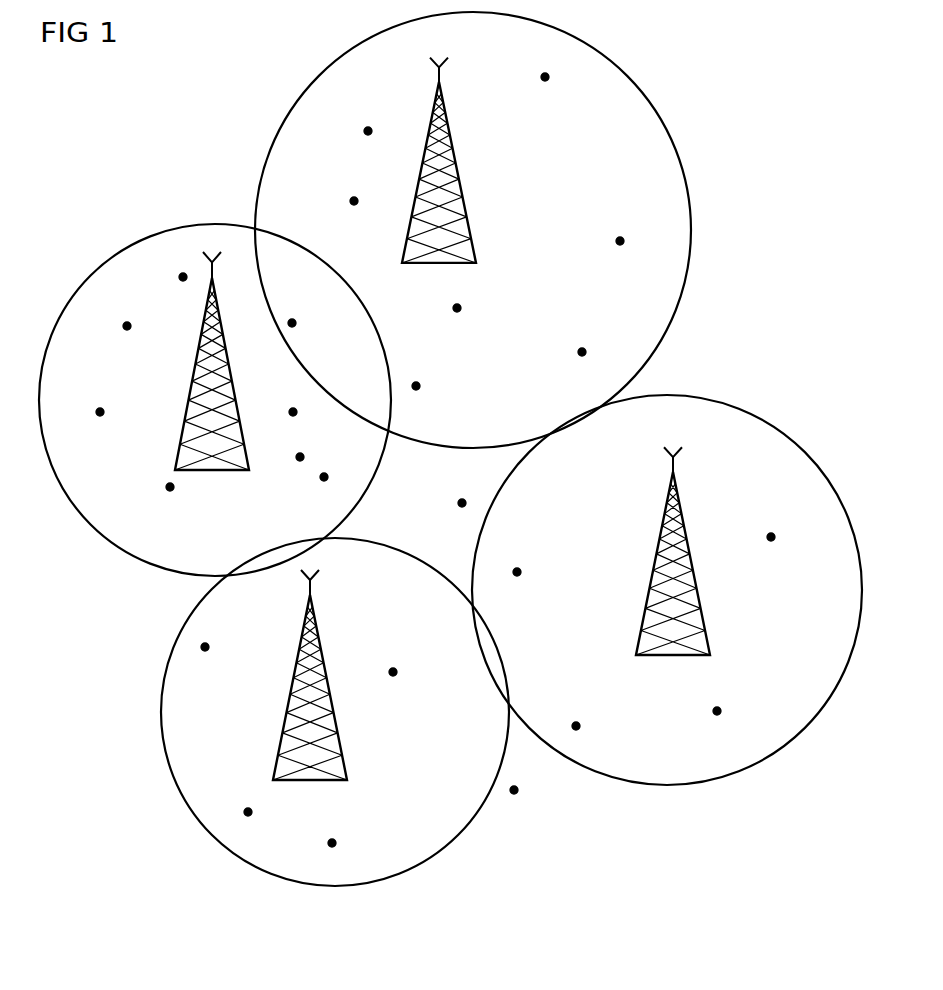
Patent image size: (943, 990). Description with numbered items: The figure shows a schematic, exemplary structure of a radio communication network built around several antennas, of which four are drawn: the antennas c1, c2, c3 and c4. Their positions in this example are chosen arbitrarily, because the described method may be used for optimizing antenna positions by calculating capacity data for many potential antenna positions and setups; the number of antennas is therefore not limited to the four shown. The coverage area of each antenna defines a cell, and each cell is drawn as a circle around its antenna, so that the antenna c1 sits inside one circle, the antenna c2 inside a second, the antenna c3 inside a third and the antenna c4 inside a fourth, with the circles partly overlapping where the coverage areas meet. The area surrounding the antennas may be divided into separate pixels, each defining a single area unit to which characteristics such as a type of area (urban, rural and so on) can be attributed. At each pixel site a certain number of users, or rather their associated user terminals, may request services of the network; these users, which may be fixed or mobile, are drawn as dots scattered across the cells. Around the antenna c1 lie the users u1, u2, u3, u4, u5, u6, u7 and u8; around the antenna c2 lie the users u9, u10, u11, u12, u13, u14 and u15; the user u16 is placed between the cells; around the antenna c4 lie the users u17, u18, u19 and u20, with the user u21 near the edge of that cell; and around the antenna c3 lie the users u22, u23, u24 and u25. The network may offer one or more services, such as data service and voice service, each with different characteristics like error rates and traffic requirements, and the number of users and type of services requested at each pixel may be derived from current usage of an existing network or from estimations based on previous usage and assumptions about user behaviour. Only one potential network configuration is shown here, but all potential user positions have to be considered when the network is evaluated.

The antenna c1 is at (232, 389).
The antenna c2 is at (471, 222).
The antenna c3 is at (655, 561).
The antenna c4 is at (338, 738).
The user u1 is at (184, 264).
The user u2 is at (142, 327).
The user u3 is at (115, 413).
The user u4 is at (186, 488).
The user u5 is at (307, 324).
The user u6 is at (308, 413).
The user u7 is at (315, 458).
The user u8 is at (339, 478).
The user u9 is at (383, 132).
The user u10 is at (376, 202).
The user u11 is at (567, 78).
The user u12 is at (642, 242).
The user u13 is at (604, 353).
The user u14 is at (479, 309).
The user u15 is at (438, 387).
The user u16 is at (441, 504).
The user u17 is at (227, 648).
The user u18 is at (415, 673).
The user u19 is at (270, 813).
The user u20 is at (354, 844).
The user u21 is at (536, 791).
The user u22 is at (598, 727).
The user u23 is at (539, 573).
The user u24 is at (739, 712).
The user u25 is at (793, 538).